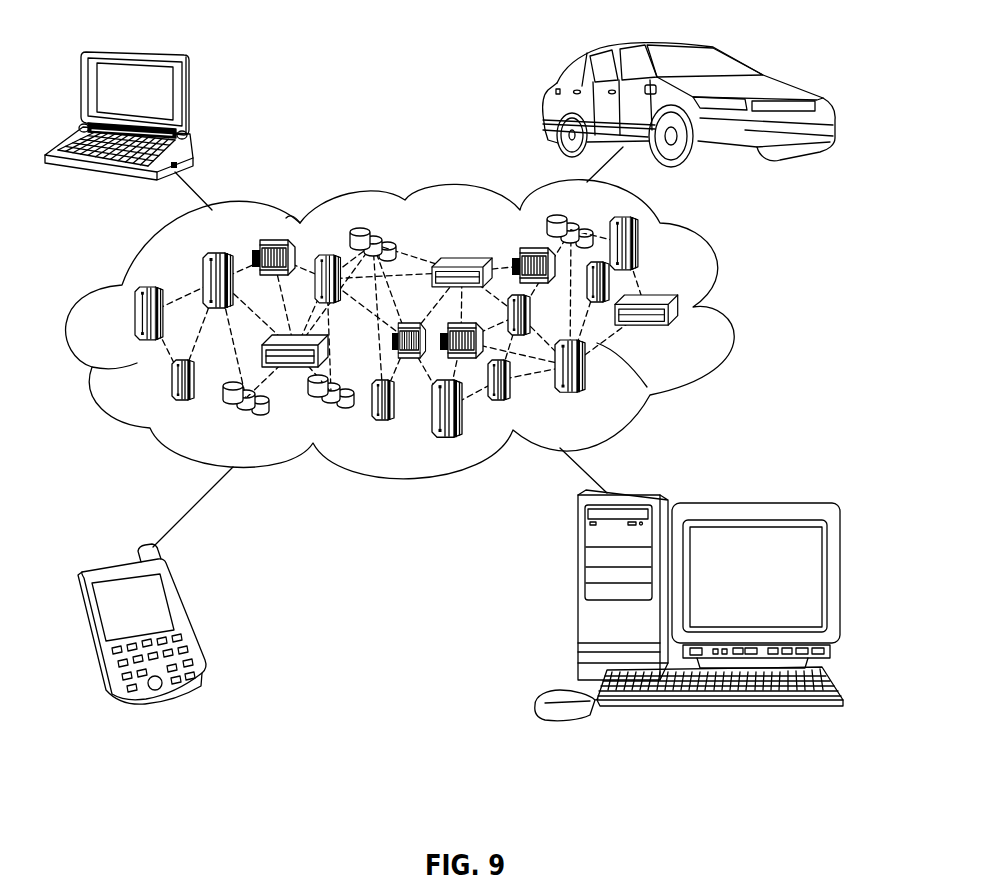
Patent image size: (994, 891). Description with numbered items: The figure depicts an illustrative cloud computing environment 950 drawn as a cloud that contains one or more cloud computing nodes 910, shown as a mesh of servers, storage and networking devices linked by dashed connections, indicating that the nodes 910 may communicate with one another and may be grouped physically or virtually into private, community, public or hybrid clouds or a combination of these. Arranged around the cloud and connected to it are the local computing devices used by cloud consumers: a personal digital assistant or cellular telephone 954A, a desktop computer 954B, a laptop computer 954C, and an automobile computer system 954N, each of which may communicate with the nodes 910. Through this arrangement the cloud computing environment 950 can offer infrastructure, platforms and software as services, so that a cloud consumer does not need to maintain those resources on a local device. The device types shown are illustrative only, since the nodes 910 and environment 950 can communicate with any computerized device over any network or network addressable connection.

The cloud computing nodes 910 is at (699, 329).
The cloud computing environment 950 is at (722, 277).
The personal digital assistant or cellular telephone 954A is at (186, 617).
The desktop computer 954B is at (578, 594).
The laptop computer 954C is at (190, 95).
The automobile computer system 954N is at (548, 93).